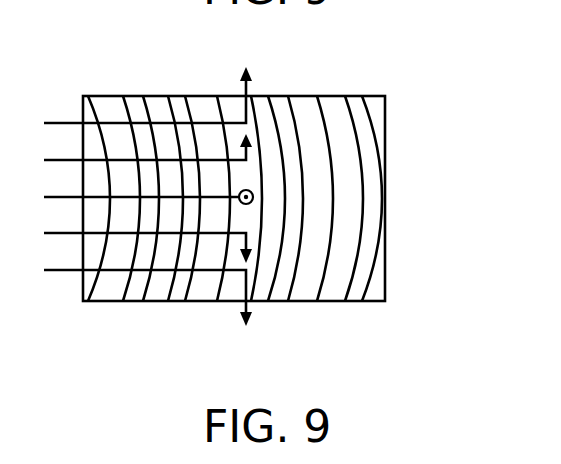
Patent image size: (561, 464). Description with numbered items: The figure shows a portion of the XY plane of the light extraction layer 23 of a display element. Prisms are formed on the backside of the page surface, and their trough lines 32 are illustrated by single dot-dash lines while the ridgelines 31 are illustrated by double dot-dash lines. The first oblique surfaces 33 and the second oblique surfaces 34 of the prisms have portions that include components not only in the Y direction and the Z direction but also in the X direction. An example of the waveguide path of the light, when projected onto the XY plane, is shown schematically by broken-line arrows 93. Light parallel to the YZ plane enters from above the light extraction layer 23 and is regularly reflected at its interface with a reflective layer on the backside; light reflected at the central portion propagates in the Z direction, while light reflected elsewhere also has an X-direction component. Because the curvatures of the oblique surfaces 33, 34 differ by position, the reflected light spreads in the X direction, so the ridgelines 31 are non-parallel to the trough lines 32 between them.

The light extraction layer 23 is at (409, 78).
The broken-line arrows 93 is at (53, 123).
The first oblique surfaces 33 is at (312, 270).
The ridgelines 31 is at (330, 263).
The second oblique surfaces 34 is at (342, 270).
The trough lines 32 is at (362, 260).